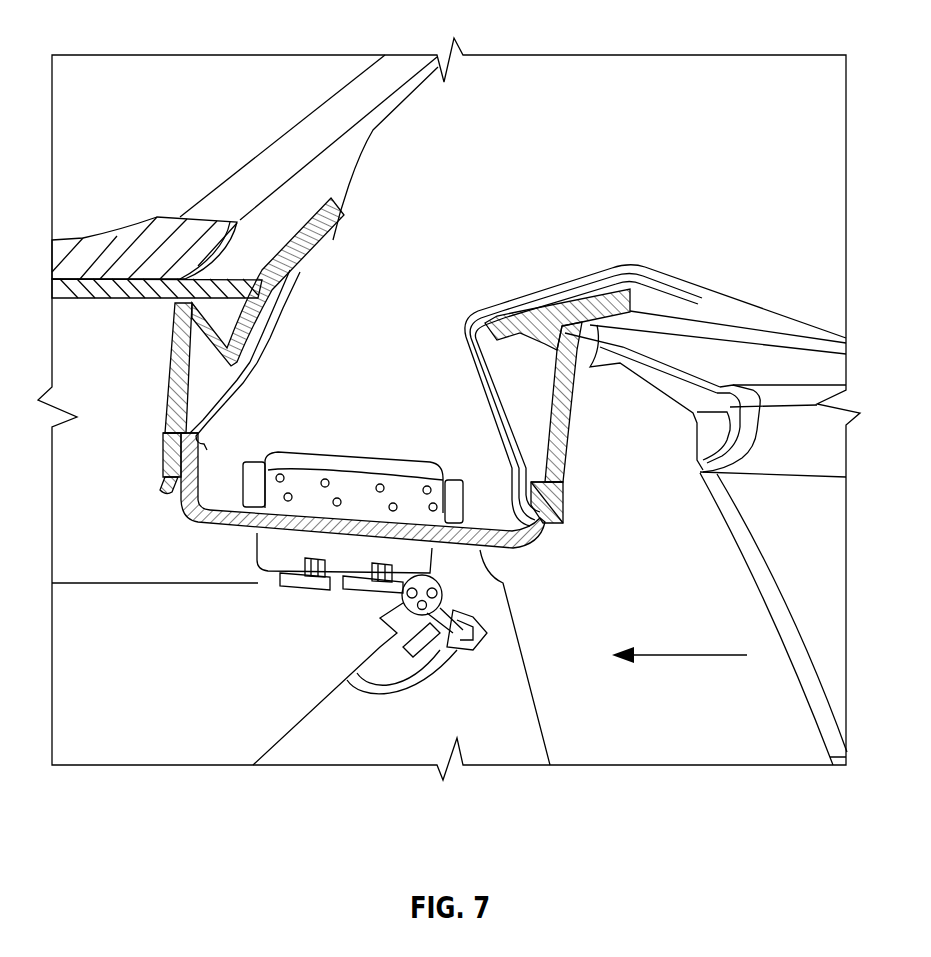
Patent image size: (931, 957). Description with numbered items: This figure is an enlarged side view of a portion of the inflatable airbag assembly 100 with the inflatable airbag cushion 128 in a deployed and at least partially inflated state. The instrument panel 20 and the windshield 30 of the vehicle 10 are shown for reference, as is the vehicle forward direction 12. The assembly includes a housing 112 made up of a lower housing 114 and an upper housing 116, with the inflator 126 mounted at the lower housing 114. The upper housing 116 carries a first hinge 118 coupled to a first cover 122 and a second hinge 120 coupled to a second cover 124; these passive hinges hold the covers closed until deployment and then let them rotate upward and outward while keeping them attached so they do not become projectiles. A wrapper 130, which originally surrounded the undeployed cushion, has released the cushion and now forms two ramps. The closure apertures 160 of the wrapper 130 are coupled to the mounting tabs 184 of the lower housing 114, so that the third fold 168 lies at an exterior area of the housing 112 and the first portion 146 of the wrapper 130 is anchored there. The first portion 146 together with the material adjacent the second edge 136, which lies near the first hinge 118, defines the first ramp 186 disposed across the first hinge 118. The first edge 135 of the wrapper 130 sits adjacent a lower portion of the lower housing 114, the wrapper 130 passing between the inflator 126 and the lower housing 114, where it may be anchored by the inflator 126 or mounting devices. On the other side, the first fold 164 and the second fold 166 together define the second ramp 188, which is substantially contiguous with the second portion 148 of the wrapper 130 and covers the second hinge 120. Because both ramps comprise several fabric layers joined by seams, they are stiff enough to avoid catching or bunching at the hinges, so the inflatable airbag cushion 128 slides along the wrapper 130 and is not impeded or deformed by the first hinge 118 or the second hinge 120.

The inflatable airbag assembly 100 is at (121, 71).
The vehicle 10 is at (198, 71).
The windshield 30 is at (300, 122).
The first cover 122 is at (318, 215).
The first portion 146 is at (307, 260).
The second edge 136 is at (273, 320).
The first hinge 118 is at (249, 364).
The first ramp 186 is at (218, 393).
The upper housing 116 is at (167, 380).
The closure apertures 160 is at (150, 405).
The mounting tabs 184 is at (163, 436).
The third fold 168 is at (162, 490).
The lower housing 114 is at (210, 527).
The first edge 135 is at (240, 523).
The inflator 126 is at (277, 580).
The second hinge 120 is at (477, 328).
The second cover 124 is at (557, 295).
The second ramp 188 is at (493, 397).
The second portion 148 is at (600, 320).
The first fold 164 is at (700, 300).
The instrument panel 20 is at (784, 370).
The inflatable airbag cushion 128 is at (657, 162).
The second fold 166 is at (562, 485).
The wrapper 130 is at (530, 540).
The housing 112 is at (482, 552).
The vehicle forward direction 12 is at (690, 657).